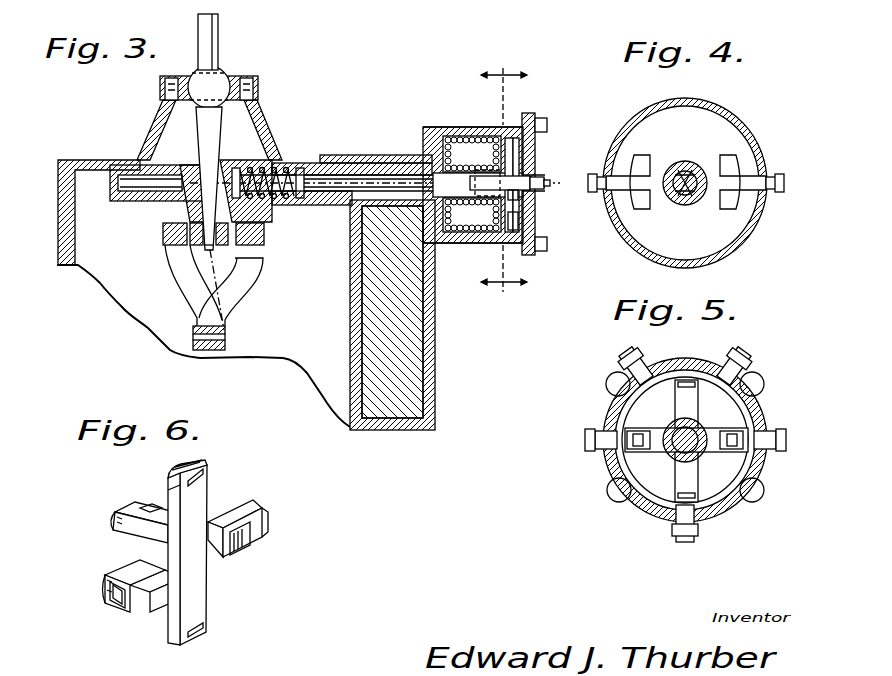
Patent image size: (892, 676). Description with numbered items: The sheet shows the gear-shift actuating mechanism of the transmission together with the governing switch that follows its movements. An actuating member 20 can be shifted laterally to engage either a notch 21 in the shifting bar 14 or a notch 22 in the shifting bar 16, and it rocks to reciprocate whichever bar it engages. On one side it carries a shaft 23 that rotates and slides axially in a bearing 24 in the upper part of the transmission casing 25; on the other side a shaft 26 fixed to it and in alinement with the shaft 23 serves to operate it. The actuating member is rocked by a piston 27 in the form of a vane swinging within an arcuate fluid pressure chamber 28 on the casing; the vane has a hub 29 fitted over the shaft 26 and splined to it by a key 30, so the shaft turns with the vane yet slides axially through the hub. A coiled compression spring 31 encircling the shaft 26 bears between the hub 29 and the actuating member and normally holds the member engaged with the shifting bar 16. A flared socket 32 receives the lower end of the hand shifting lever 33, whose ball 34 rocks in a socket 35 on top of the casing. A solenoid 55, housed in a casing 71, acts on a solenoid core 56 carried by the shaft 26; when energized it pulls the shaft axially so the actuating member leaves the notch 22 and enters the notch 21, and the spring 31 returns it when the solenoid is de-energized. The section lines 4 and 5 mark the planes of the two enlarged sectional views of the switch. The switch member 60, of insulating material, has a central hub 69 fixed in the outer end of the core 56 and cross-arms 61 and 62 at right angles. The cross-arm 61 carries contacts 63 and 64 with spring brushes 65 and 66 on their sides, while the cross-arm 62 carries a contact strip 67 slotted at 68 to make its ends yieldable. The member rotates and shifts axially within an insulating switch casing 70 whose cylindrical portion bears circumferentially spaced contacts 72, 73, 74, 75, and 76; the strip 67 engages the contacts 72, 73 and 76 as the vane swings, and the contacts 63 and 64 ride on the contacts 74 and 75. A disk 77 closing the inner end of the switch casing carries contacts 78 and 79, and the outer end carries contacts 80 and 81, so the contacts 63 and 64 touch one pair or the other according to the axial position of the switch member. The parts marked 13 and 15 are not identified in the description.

In FIG. 3, the outlet passage 13 is at (250, 277).
In FIG. 3, the shifting bar 14 is at (265, 234).
In FIG. 3, the inlet passage 15 is at (178, 274).
In FIG. 3, the shifting bar 16 is at (163, 234).
In FIG. 3, the actuating member 20 is at (230, 214).
In FIG. 3, the notch 21 is at (230, 246).
In FIG. 3, the notch 22 is at (192, 222).
In FIG. 3, the shaft 23 is at (133, 201).
In FIG. 3, the bearing 24 is at (118, 184).
In FIG. 3, the transmission casing 25 is at (60, 236).
In FIG. 3, the shaft 26 is at (325, 176).
In FIG. 3, the piston 27 is at (410, 340).
In FIG. 3, the fluid pressure chamber 28 is at (432, 378).
In FIG. 3, the hub 29 is at (372, 155).
In FIG. 3, the key 30 is at (394, 163).
In FIG. 3, the coiled compression spring 31 is at (295, 168).
In FIG. 3, the socket 32 is at (227, 170).
In FIG. 3, the hand shifting lever 33 is at (216, 36).
In FIG. 3, the ball 34 is at (221, 70).
In FIG. 3, the socket 35 is at (232, 82).
In FIG. 3, the solenoid 55 is at (457, 127).
In FIG. 3, the solenoid core 56 is at (440, 186).
In FIG. 4, the solenoid core 56 is at (692, 168).
In FIG. 5, the solenoid core 56 is at (690, 462).
In FIG. 6, the switch member 60 is at (160, 558).
In FIG. 6, the cross-arm 61 is at (209, 521).
In FIG. 6, the cross-arm 62 is at (168, 493).
In FIG. 3, the contact 63 is at (518, 196).
In FIG. 6, the contact 63 is at (104, 585).
In FIG. 5, the contact 64 is at (612, 414).
In FIG. 6, the spring brush 65 is at (140, 610).
In FIG. 6, the spring brush 66 is at (253, 538).
In FIG. 5, the contact strip 67 is at (690, 413).
In FIG. 6, the contact strip 67 is at (202, 600).
In FIG. 6, the slot 68 is at (207, 627).
In FIG. 4, the hub 69 is at (692, 195).
In FIG. 5, the hub 69 is at (672, 462).
In FIG. 6, the hub 69 is at (265, 515).
In FIG. 3, the switch casing 70 is at (509, 138).
In FIG. 3, the casing 71 is at (460, 246).
In FIG. 5, the contact 72 is at (694, 412).
In FIG. 3, the contact 73 is at (530, 142).
In FIG. 5, the contact 73 is at (668, 412).
In FIG. 5, the contact 74 is at (732, 468).
In FIG. 3, the contact 75 is at (518, 160).
In FIG. 5, the contact 75 is at (660, 464).
In FIG. 3, the contact 76 is at (518, 220).
In FIG. 5, the contact 76 is at (715, 505).
In FIG. 3, the disk 77 is at (503, 138).
In FIG. 4, the disk 77 is at (724, 130).
In FIG. 4, the contact 78 is at (641, 165).
In FIG. 4, the contact 79 is at (733, 200).
In FIG. 5, the contact 80 is at (727, 460).
In FIG. 3, the contact 81 is at (541, 178).
In FIG. 5, the contact 81 is at (645, 418).
In FIG. 3, the section line 4— 4 is at (477, 180).
In FIG. 3, the section line 5— 5 is at (523, 180).